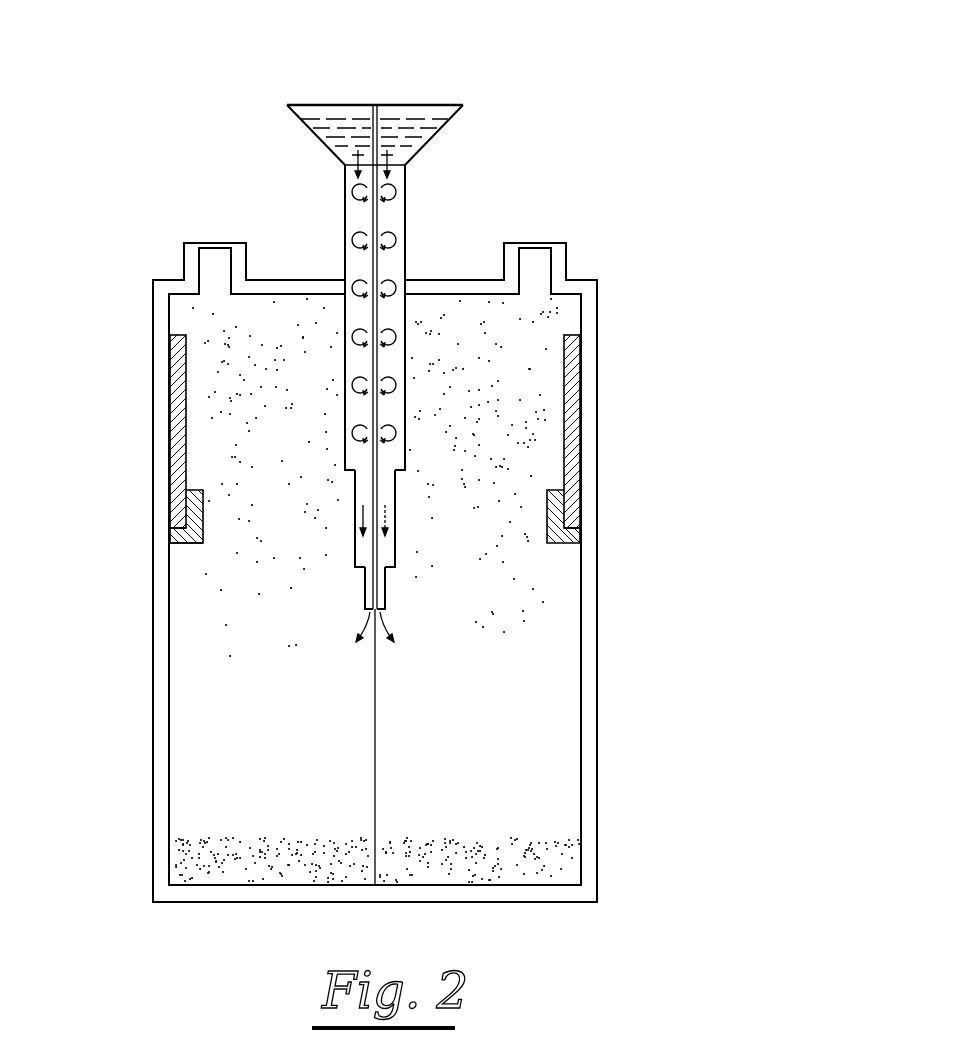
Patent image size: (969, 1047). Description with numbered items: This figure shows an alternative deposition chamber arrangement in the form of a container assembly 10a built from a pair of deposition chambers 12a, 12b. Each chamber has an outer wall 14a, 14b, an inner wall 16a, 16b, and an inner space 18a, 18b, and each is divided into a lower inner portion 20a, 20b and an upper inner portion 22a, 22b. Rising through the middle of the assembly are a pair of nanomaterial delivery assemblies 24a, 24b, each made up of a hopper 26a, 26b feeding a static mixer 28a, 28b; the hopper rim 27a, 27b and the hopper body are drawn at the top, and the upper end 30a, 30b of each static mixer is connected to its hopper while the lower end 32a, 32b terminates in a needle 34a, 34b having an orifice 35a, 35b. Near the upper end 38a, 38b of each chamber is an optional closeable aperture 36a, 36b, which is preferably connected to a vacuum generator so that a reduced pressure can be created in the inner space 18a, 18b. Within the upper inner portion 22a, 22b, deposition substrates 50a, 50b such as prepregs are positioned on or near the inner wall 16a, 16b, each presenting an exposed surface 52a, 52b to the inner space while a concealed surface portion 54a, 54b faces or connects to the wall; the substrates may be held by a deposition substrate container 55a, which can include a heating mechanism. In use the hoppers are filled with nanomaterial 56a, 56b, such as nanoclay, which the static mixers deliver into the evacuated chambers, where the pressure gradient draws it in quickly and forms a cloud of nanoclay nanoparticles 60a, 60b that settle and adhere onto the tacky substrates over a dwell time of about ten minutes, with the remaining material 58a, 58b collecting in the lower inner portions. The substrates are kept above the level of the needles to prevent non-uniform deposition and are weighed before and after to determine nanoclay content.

The container assembly 10a is at (68, 176).
The deposition chamber 12a is at (153, 300).
The deposition chamber 12b is at (597, 310).
The outer wall 14a is at (153, 605).
The outer wall 14b is at (598, 600).
The inner wall 16a is at (169, 660).
The inner wall 16b is at (582, 710).
The inner space 18a is at (224, 761).
The inner space 18b is at (529, 748).
The lower inner portion 20a is at (200, 821).
The lower inner portion 20b is at (556, 822).
The upper inner portion 22a is at (222, 317).
The upper inner portion 22b is at (560, 300).
The nanomaterial delivery assembly 24a is at (318, 206).
The nanomaterial delivery assembly 24b is at (449, 243).
The hopper 26a is at (305, 128).
The hopper 26b is at (430, 133).
The funnel rim left 27a is at (303, 105).
The funnel rim right 27b is at (450, 105).
The static mixer 28a is at (345, 273).
The static mixer 28b is at (405, 205).
The upper end 30a is at (345, 165).
The upper end 30b is at (405, 165).
The lower end 32a is at (363, 567).
The lower end 32b is at (387, 567).
The needle 34a is at (365, 590).
The needle 34b is at (385, 590).
The orifice 35a is at (357, 610).
The orifice 35b is at (393, 610).
The closeable aperture 36a is at (184, 246).
The closeable aperture 36b is at (566, 246).
The upper end 38a is at (153, 281).
The upper end 38b is at (597, 280).
The deposition substrate 50a is at (169, 425).
The deposition substrate 50b is at (582, 433).
The exposed surface 52a is at (188, 449).
The exposed surface 52b is at (568, 355).
The concealed surface portion 54a is at (185, 492).
The concealed surface portion 54b is at (582, 495).
The deposition substrate container 55a is at (186, 548).
The nanomaterial 56a is at (346, 122).
The nanomaterial 56b is at (392, 122).
The sediment layer left 58a is at (235, 838).
The sediment layer right 58b is at (510, 835).
The nanoclay nanoparticles 60a is at (236, 386).
The nanoclay nanoparticles 60b is at (535, 416).